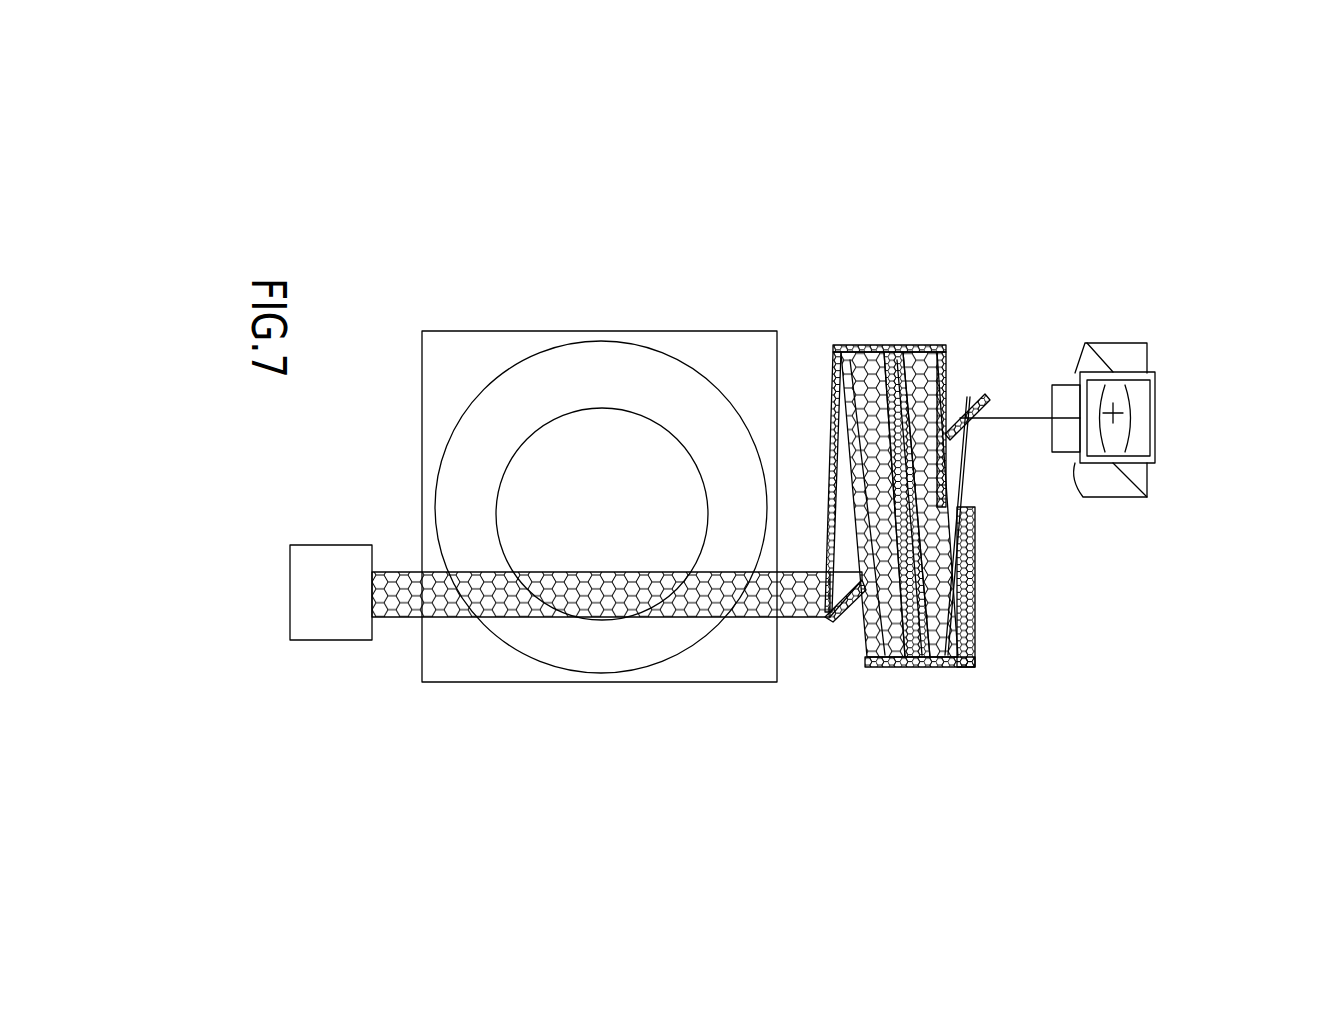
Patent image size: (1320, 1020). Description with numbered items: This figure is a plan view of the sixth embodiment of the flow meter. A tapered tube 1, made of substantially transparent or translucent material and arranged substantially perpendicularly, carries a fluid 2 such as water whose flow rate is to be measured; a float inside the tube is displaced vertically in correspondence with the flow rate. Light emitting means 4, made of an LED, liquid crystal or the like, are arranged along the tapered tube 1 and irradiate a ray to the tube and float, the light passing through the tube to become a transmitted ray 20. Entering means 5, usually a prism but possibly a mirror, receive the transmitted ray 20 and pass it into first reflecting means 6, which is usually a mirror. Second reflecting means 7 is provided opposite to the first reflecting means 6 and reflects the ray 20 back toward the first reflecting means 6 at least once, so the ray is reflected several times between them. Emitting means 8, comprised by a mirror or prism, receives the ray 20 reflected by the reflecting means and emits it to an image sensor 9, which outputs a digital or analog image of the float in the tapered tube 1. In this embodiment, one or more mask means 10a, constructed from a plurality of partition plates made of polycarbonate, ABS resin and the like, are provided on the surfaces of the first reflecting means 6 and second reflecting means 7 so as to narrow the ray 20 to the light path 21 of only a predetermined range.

The tapered tube 1 is at (520, 647).
The fluid 2 is at (553, 508).
The light emitting means 4 is at (312, 615).
The entering means 5 is at (847, 600).
The first reflecting means 6 is at (863, 347).
The second reflecting means 7 is at (895, 668).
The emitting means 8 is at (967, 397).
The image sensor 9 is at (1155, 452).
The mask means 10a is at (833, 358).
The transmitted ray 20 is at (803, 620).
The light path 21 is at (965, 578).